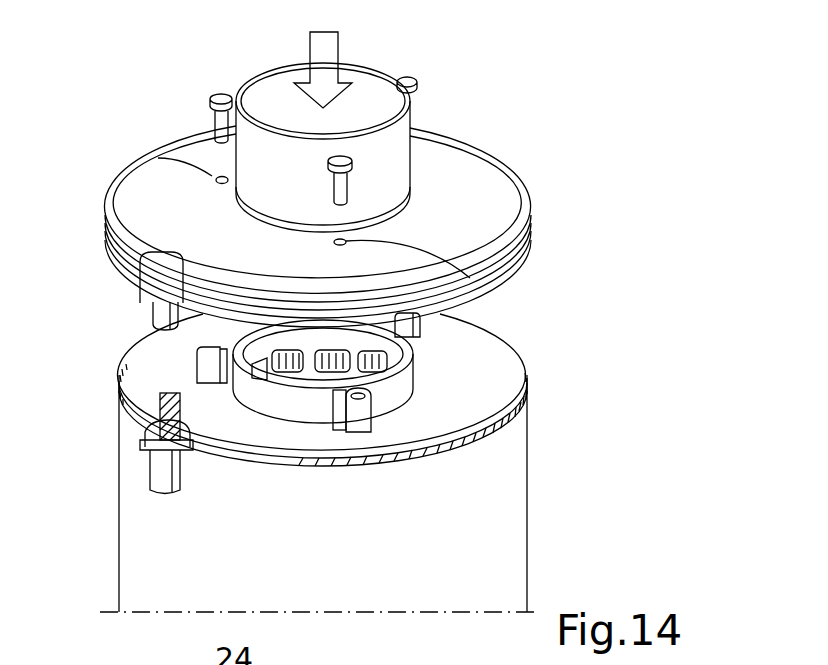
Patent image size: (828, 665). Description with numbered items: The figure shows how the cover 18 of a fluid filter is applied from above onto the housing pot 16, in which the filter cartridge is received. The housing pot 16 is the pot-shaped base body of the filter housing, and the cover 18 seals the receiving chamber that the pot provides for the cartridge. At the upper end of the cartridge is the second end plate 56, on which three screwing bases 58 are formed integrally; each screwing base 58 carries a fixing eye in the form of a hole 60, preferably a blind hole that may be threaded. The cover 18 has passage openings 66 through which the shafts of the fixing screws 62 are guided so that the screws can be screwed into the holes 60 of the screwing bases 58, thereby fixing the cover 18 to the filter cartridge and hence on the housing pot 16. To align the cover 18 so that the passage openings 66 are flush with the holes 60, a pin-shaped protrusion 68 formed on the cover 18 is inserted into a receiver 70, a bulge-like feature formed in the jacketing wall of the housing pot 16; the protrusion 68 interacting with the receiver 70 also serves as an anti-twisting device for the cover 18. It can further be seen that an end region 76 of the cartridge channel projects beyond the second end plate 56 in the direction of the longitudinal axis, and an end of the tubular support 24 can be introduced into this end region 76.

The housing pot 16 is at (506, 524).
The cover 18 is at (490, 183).
The tubular support 24 is at (273, 90).
The second end plate 56 is at (453, 385).
The screwing base 58 is at (400, 322).
The hole 60 is at (152, 323).
The fixing screw 62 is at (203, 91).
The passage opening 66 is at (420, 137).
The pin-shaped protrusion 68 is at (138, 300).
The receiver 70 is at (148, 476).
The end region 76 is at (245, 390).